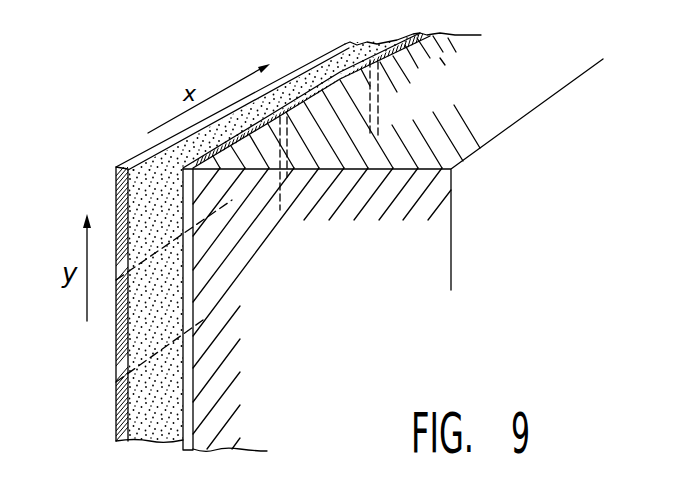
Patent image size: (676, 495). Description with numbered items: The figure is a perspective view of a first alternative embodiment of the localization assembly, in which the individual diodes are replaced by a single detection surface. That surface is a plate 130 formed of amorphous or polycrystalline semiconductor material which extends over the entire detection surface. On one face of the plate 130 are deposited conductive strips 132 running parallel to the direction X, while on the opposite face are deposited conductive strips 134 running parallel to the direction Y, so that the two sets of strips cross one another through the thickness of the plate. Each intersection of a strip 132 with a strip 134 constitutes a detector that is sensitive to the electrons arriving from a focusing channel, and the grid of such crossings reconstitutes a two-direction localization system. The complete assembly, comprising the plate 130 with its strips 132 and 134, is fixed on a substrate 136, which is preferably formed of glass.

The plate 130 is at (147, 393).
The conductive strips 132 is at (116, 193).
The conductive strips 134 is at (184, 258).
The substrate 136 is at (427, 241).